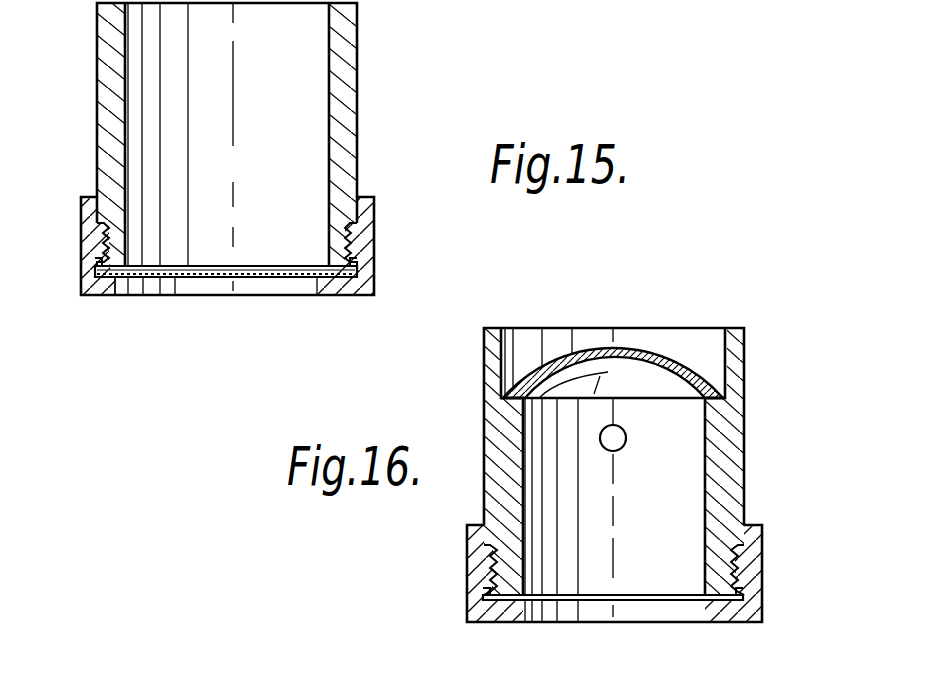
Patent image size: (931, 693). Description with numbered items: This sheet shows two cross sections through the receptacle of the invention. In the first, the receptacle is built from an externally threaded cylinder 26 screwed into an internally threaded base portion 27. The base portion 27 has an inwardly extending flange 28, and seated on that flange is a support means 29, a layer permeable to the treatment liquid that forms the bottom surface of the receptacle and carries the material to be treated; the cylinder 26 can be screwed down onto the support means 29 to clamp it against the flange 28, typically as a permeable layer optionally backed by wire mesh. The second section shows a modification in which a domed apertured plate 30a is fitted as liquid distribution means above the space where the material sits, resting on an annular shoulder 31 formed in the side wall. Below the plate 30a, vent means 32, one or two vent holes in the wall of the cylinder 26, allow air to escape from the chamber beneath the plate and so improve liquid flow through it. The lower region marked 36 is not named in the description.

In FIG. 15, the externally threaded cylinder 26 is at (352, 50).
In FIG. 15, the internally threaded base portion 27 is at (363, 245).
In FIG. 15, the inwardly extending flange 28 is at (343, 295).
In FIG. 15, the support means 29 is at (120, 294).
In FIG. 16, the apertured plate 30a is at (693, 370).
In FIG. 16, the annular shoulder 31 is at (710, 400).
In FIG. 16, the vent means 32 is at (614, 438).
In FIG. 16, the bottom collar with disc 36 is at (733, 622).